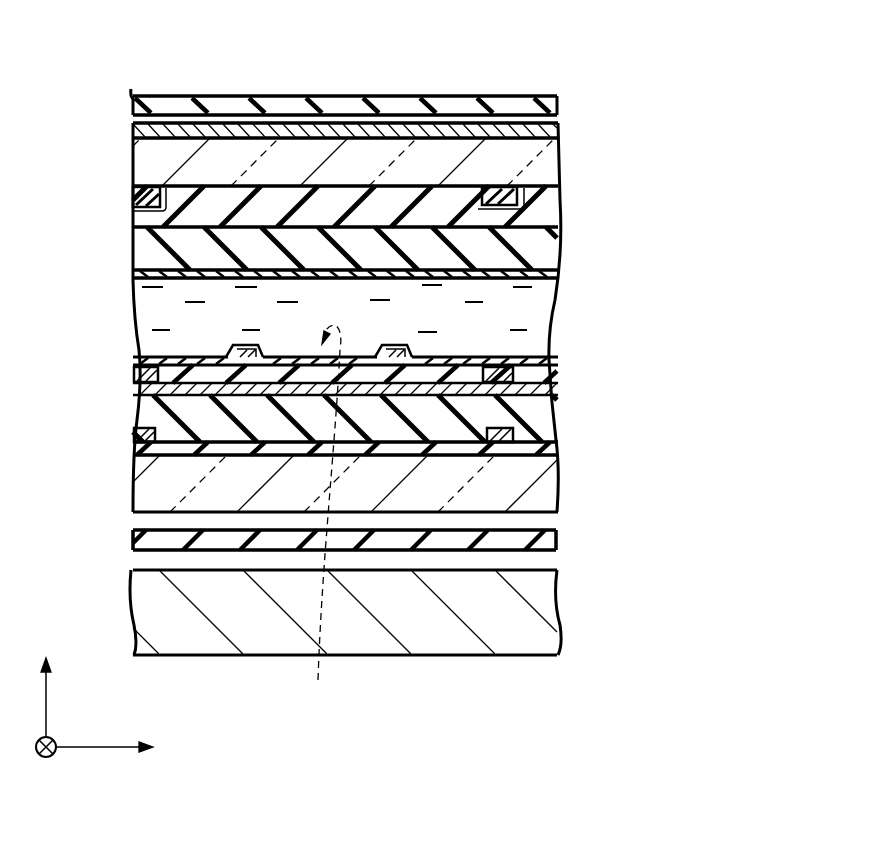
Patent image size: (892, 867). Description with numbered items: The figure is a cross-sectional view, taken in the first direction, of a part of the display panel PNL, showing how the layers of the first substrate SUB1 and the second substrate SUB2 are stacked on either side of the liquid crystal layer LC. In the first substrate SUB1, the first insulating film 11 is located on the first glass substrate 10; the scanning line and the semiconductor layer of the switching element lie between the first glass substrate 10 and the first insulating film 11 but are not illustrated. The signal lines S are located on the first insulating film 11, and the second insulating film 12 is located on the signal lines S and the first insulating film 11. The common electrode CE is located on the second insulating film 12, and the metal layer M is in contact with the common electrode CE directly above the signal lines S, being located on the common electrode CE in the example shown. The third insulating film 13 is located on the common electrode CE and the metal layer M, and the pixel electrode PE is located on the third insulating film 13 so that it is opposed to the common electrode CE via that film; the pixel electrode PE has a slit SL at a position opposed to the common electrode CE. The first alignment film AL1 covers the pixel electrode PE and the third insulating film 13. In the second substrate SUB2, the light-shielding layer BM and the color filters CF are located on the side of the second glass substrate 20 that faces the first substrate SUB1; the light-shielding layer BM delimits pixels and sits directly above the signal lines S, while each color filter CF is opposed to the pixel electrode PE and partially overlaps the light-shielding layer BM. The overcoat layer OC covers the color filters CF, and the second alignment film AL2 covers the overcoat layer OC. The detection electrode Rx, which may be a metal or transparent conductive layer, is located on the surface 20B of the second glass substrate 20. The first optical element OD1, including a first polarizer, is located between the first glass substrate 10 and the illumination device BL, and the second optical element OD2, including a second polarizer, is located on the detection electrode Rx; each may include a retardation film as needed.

The display panel PNL is at (551, 88).
The second optical element OD2 is at (557, 104).
The second substrate SUB2 is at (572, 200).
The detection electrode Rx is at (132, 129).
The surface of the second glass substrate 20B is at (239, 118).
The second glass substrate 20 is at (543, 163).
The color filter CF is at (333, 205).
The light-shielding layer BM is at (157, 193).
The overcoat layer OC is at (545, 243).
The second alignment film AL2 is at (547, 281).
The liquid crystal layer LC is at (535, 301).
The first substrate SUB1 is at (569, 412).
The first alignment film AL1 is at (547, 344).
The pixel electrode PE is at (392, 353).
The third insulating film 13 is at (547, 373).
The metal layer M is at (148, 362).
The common electrode CE is at (484, 368).
The second insulating film 12 is at (145, 410).
The signal line S is at (145, 444).
The first insulating film 11 is at (548, 449).
The first glass substrate 10 is at (547, 491).
The slit SL is at (329, 515).
The first optical element OD1 is at (547, 542).
The illumination device BL is at (547, 611).